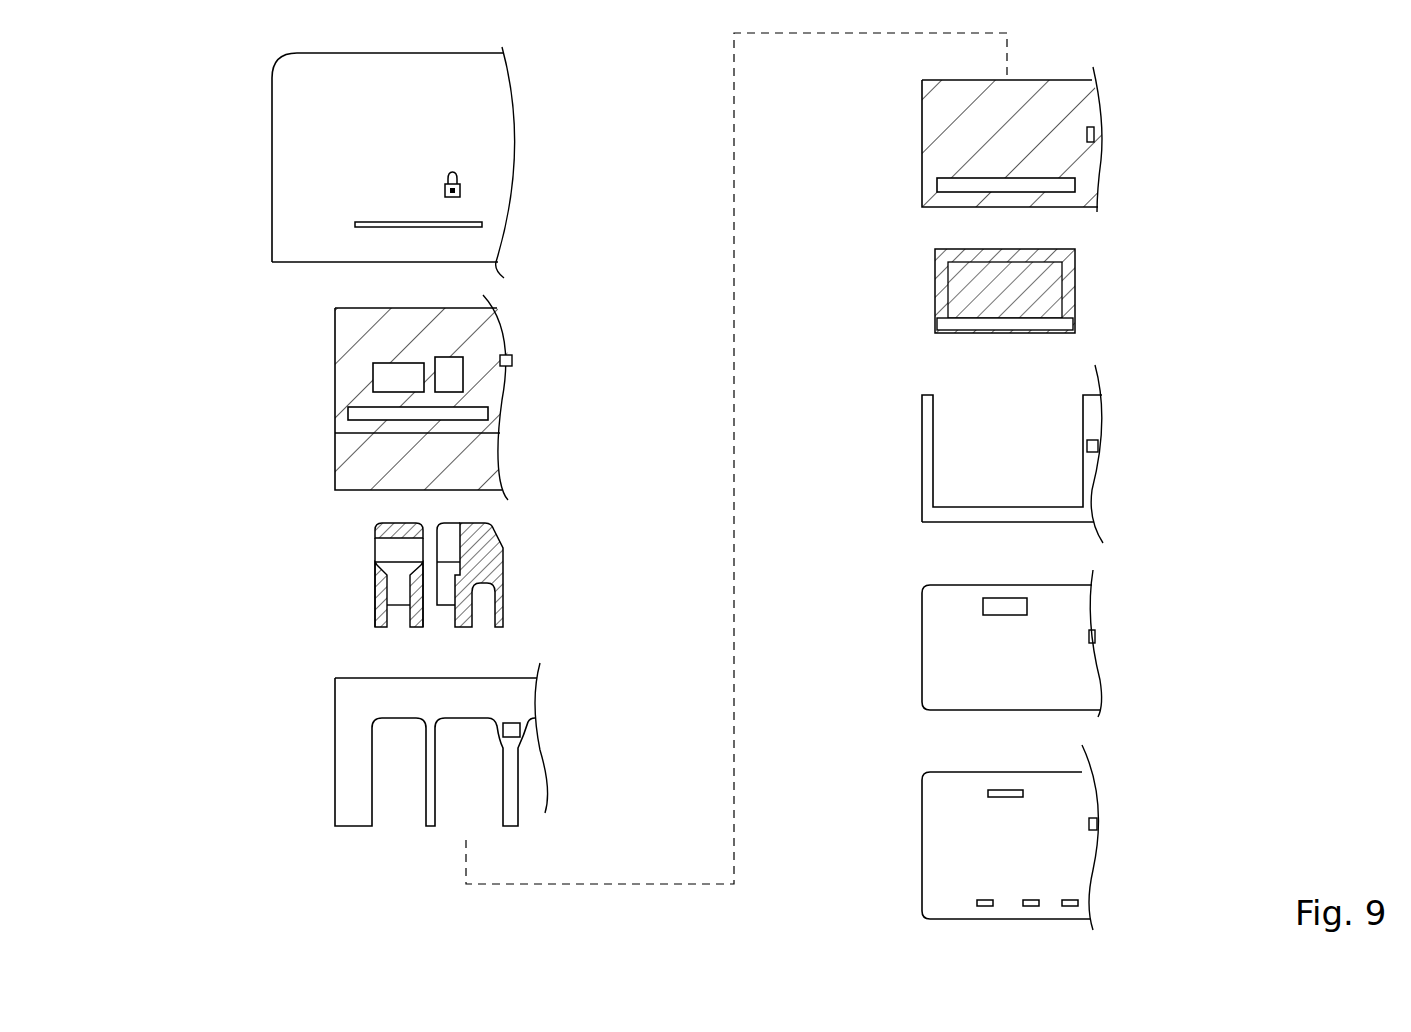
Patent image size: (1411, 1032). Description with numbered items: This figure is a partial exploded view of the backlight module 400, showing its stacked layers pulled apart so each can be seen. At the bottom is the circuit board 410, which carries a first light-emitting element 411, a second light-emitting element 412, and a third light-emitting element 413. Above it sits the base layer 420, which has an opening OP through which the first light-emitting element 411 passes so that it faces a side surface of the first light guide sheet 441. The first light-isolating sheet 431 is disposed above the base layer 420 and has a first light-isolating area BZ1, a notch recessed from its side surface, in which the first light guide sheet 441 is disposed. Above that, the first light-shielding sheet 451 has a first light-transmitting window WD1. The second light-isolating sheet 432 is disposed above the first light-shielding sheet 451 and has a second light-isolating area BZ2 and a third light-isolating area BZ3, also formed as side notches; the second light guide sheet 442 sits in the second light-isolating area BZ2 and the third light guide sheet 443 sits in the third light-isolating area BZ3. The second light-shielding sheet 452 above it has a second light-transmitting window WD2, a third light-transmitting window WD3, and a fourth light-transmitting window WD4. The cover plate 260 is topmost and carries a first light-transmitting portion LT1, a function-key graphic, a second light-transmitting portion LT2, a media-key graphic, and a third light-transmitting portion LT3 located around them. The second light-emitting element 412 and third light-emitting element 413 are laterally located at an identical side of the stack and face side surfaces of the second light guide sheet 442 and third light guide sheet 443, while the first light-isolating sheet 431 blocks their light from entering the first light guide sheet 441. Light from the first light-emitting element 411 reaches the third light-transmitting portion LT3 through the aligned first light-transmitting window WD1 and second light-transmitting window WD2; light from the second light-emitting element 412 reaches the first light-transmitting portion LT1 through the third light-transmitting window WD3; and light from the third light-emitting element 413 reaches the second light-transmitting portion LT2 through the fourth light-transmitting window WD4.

The backlight module 400 is at (93, 41).
The cover plate 260 is at (312, 113).
The first light-transmitting portion LT1 is at (443, 176).
The second light-transmitting portion LT2 is at (378, 186).
The third light-transmitting portion LT3 is at (357, 225).
The second light-shielding sheet 452 is at (353, 338).
The fourth light-transmitting window WD4 is at (365, 382).
The third light-transmitting window WD3 is at (468, 364).
The second light-transmitting window WD2 is at (494, 402).
The third light guide sheet 443 is at (375, 596).
The second light guide sheet 442 is at (503, 548).
The second light-isolating sheet 432 is at (343, 737).
The third light-isolating area BZ3 is at (362, 782).
The second light-isolating area BZ2 is at (497, 781).
The first light-transmitting window WD1 is at (915, 178).
The first light-shielding sheet 451 is at (1088, 158).
The first light guide sheet 441 is at (1070, 279).
The first light-isolating sheet 431 is at (1070, 413).
The first light-isolating area BZ1 is at (1068, 486).
The opening OP is at (965, 594).
The base layer 420 is at (1083, 664).
The first light-emitting element 411 is at (987, 793).
The circuit board 410 is at (955, 833).
The second light-emitting element 412 is at (1030, 898).
The third light-emitting element 413 is at (977, 902).